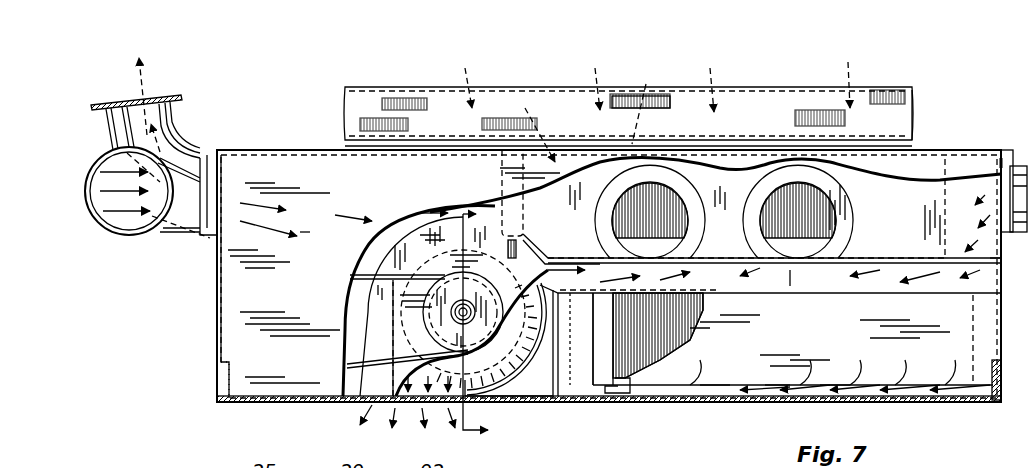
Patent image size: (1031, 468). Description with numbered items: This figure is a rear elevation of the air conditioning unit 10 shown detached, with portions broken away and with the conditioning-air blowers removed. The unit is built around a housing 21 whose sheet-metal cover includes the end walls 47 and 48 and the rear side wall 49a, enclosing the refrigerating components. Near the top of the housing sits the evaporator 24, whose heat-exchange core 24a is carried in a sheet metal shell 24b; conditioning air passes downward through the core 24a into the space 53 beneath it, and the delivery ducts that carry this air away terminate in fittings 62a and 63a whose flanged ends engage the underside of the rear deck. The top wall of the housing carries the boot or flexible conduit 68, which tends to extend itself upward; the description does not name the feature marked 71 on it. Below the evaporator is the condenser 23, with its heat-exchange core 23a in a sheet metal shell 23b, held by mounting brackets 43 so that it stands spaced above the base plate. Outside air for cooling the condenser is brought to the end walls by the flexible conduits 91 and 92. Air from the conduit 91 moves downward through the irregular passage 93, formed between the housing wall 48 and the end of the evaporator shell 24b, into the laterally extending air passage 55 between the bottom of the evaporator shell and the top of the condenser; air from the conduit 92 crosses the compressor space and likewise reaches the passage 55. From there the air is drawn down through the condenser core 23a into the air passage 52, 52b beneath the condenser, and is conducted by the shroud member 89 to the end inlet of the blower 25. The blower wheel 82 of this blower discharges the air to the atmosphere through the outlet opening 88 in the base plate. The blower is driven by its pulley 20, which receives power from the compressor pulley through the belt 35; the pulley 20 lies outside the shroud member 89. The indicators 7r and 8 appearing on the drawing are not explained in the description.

The air flow path region 7r is at (338, 283).
The section line 8- 8 is at (484, 323).
The air conditioning unit 10 is at (914, 142).
The pulley 20 is at (425, 330).
The housing 21 is at (256, 152).
The condenser 23 is at (680, 383).
The heat-exchange core 23a is at (598, 395).
The sheet metal shell 23b is at (782, 392).
The evaporator 24 is at (535, 210).
The heat-exchange core 24a is at (635, 222).
The sheet metal shell 24b is at (690, 283).
The blower 25 is at (412, 242).
The belt 35 is at (365, 275).
The mounting brackets 43 is at (640, 390).
The end wall 47 is at (216, 303).
The end wall 48 is at (999, 280).
The side wall 49a is at (245, 402).
The air passage 52 is at (722, 392).
The floor openings 52b is at (836, 392).
The space 53 is at (798, 266).
The air passage 55 is at (793, 292).
The fitting 62a is at (169, 132).
The fitting 63a is at (1008, 152).
The boot or flexible conduit 68 is at (345, 112).
The duct grille 71 is at (645, 96).
The blower wheel 82 is at (505, 360).
The outlet opening 88 is at (395, 402).
The shroud member 89 is at (525, 252).
The flexible conduit 91 is at (1001, 240).
The flexible conduit 92 is at (195, 233).
The irregular passage 93 is at (1000, 248).